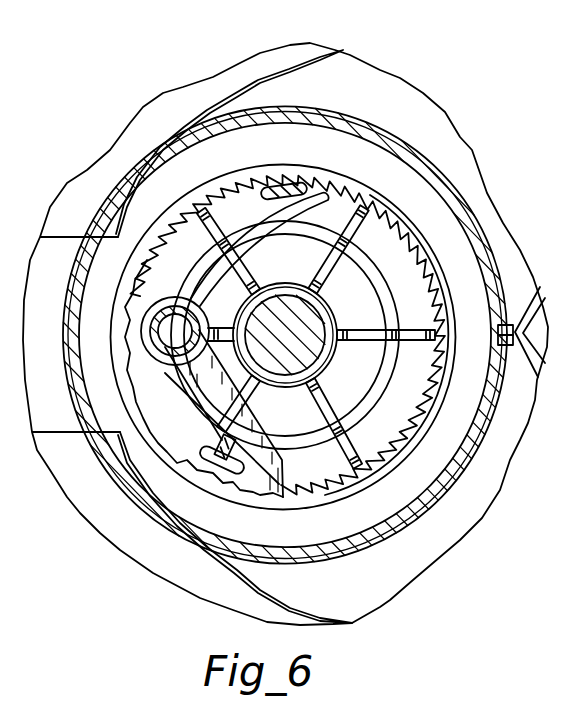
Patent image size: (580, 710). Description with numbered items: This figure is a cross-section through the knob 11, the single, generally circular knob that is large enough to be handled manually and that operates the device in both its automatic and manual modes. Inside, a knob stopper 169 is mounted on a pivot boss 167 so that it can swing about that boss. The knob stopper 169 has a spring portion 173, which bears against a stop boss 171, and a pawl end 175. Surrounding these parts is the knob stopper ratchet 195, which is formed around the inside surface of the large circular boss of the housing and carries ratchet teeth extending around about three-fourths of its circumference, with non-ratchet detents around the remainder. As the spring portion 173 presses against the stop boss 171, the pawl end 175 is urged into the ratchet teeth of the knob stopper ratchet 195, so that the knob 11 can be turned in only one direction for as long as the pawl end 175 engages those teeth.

The knob 11 is at (345, 555).
The pivot boss 167 is at (190, 306).
The knob stopper 169 is at (182, 288).
The stop boss 171 is at (265, 198).
The spring portion 173 is at (337, 190).
The pawl end 175 is at (285, 472).
The knob stopper ratchet 195 is at (410, 412).